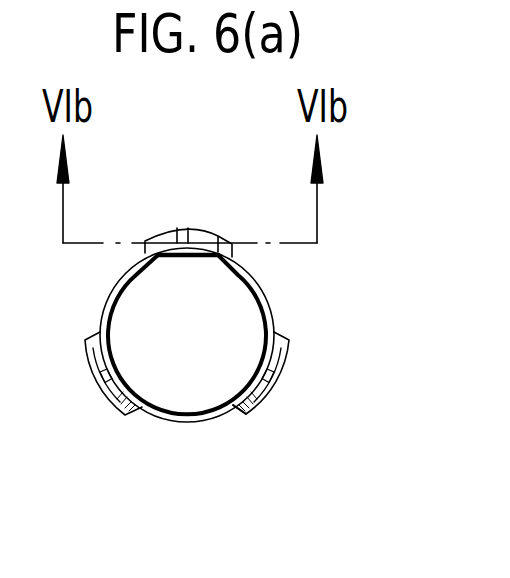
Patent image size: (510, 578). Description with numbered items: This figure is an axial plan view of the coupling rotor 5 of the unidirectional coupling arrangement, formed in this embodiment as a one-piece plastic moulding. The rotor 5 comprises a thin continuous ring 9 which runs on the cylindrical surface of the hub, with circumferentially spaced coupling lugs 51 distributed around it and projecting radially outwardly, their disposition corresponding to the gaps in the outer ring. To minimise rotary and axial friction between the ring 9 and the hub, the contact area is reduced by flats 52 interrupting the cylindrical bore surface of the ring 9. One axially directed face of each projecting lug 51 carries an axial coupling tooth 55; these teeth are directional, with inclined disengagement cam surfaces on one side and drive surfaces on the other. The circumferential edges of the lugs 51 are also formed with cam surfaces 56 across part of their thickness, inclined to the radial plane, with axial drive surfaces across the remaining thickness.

The coupling rotor 5 is at (200, 425).
The thin continuous ring 9 is at (127, 283).
The coupling lug 51 is at (284, 331).
The flat 52 is at (98, 366).
The axial coupling tooth 55 is at (266, 386).
The cam surface 56 is at (238, 417).